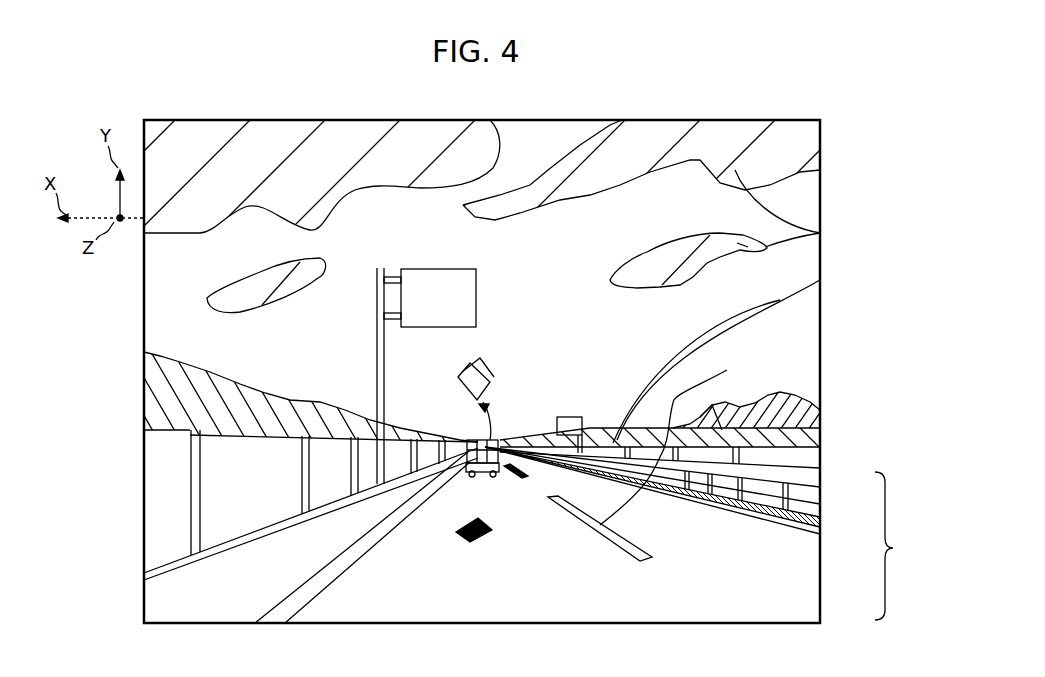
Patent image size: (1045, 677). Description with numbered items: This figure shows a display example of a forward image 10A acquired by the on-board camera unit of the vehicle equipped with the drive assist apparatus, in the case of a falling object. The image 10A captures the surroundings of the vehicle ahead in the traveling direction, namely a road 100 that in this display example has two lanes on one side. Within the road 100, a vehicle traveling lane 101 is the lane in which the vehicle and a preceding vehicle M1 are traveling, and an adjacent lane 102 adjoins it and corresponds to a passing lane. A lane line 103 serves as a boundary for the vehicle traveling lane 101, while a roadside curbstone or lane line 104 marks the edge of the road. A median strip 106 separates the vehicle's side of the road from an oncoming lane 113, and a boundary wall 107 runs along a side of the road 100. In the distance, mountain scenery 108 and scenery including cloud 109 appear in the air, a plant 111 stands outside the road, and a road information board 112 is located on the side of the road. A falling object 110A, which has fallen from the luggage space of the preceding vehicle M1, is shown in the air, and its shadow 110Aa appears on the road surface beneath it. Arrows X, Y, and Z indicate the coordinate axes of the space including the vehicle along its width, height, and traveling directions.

The image 10A is at (822, 131).
The road 100 is at (903, 546).
The vehicle traveling lane 101 is at (595, 600).
The adjacent lane 102 is at (752, 560).
The lane line 103 is at (775, 400).
The roadside curbstone or lane line 104 is at (297, 600).
The median strip 106 is at (745, 475).
The boundary wall 107 is at (240, 460).
The mountain scenery 108 is at (160, 379).
The scenery including cloud 109 is at (806, 231).
The plant 111 is at (612, 535).
The road information board 112 is at (567, 417).
The oncoming lane 113 is at (785, 480).
The falling object 110A is at (460, 372).
The shadow of the falling object 110Aa is at (483, 552).
The preceding vehicle M1 is at (467, 437).